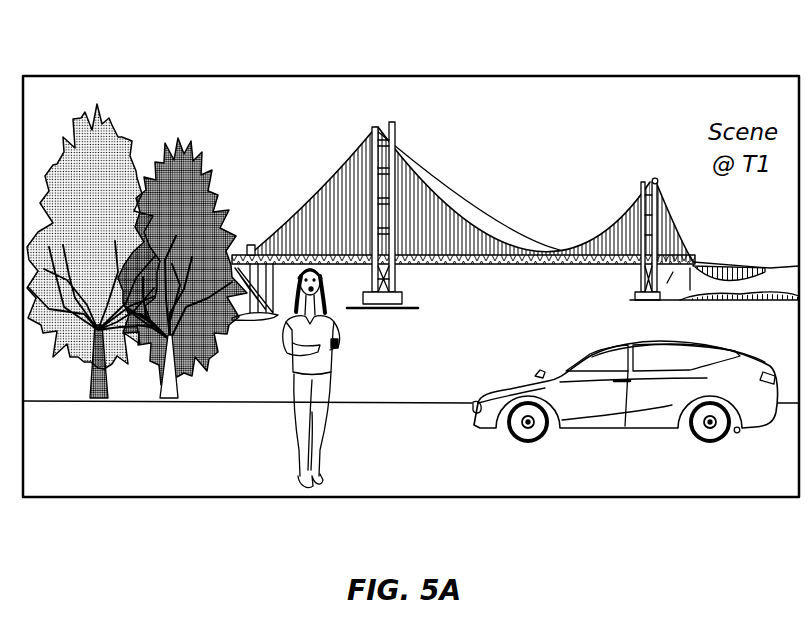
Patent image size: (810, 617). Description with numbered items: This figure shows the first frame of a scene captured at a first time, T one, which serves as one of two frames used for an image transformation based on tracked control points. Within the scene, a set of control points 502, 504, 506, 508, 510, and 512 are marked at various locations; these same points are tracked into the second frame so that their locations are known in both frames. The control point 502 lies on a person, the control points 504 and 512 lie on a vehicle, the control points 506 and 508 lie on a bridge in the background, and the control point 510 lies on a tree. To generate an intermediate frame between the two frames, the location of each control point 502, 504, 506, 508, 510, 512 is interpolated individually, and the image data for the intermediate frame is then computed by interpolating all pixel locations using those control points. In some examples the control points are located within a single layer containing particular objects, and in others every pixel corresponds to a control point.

The control point 502 is at (292, 318).
The control point 504 is at (510, 432).
The control point 506 is at (397, 252).
The control point 508 is at (656, 182).
The control point 510 is at (145, 372).
The control point 512 is at (735, 432).